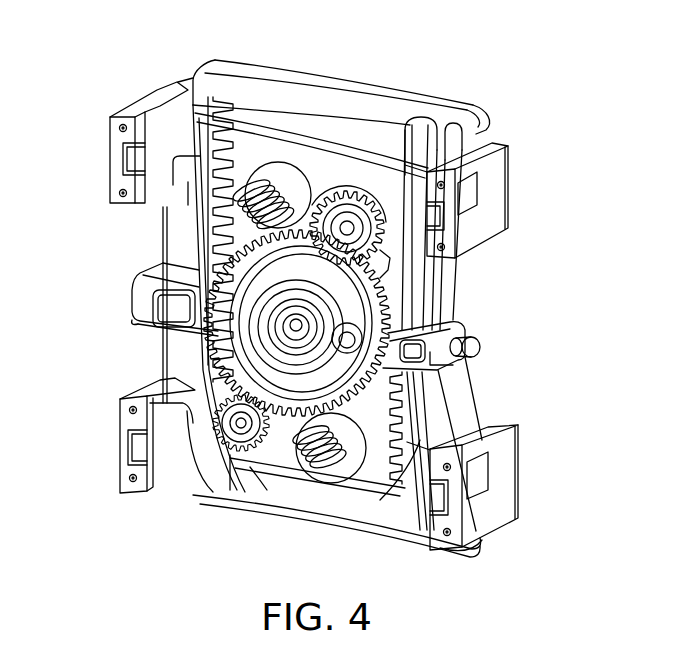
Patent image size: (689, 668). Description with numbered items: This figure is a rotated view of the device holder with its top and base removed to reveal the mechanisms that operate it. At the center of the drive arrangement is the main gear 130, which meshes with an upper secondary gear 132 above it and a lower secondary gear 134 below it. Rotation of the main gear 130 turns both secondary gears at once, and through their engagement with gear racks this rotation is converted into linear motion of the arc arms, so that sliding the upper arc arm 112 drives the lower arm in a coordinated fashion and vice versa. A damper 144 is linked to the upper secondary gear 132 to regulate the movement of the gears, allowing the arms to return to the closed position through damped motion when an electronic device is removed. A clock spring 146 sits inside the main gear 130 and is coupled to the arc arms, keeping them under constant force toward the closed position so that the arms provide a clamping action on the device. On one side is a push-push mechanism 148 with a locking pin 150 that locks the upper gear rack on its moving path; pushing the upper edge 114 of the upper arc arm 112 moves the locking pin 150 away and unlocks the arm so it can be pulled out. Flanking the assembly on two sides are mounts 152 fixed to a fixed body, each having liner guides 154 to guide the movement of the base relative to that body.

The upper arc arm 112 is at (368, 66).
The upper edge 114 is at (488, 541).
The main gear 130 is at (463, 324).
The upper secondary gear 132 is at (400, 240).
The lower secondary gear 134 is at (213, 395).
The damper 144 is at (385, 265).
The clock spring 146 is at (217, 270).
The push-push mechanism 148 is at (130, 282).
The locking pin 150 is at (178, 310).
The mounts 152 is at (133, 120).
The liner guides 154 is at (133, 156).